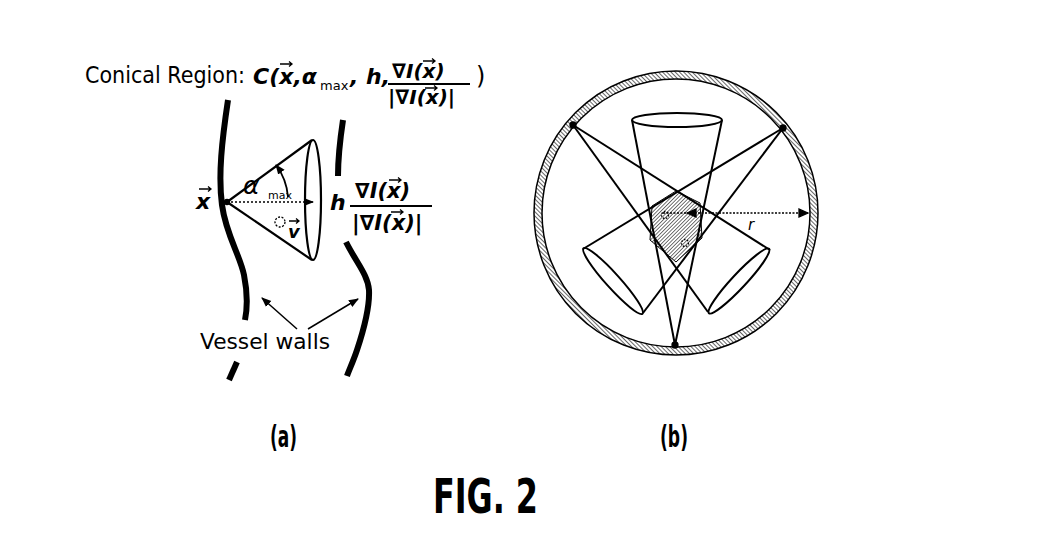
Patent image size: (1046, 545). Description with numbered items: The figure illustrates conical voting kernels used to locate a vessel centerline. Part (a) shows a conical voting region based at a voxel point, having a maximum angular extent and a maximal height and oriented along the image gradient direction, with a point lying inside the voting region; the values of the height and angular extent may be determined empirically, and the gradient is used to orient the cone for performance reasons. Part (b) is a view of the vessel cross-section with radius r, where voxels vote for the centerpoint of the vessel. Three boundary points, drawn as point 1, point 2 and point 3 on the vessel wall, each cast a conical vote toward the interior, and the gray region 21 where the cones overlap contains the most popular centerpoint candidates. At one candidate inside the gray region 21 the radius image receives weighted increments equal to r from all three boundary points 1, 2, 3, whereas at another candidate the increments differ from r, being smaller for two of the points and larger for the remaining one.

The gray region 21 is at (702, 196).
The first boundary point x1 1 is at (559, 94).
The second boundary point x2 2 is at (797, 98).
The third boundary point x3 3 is at (675, 358).